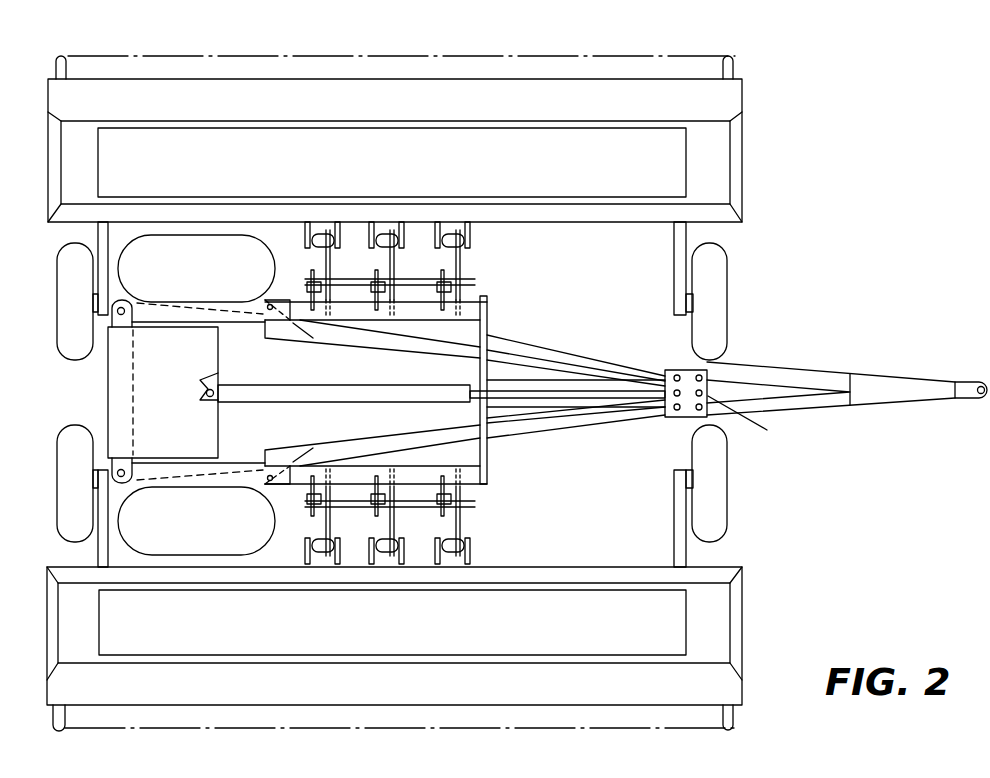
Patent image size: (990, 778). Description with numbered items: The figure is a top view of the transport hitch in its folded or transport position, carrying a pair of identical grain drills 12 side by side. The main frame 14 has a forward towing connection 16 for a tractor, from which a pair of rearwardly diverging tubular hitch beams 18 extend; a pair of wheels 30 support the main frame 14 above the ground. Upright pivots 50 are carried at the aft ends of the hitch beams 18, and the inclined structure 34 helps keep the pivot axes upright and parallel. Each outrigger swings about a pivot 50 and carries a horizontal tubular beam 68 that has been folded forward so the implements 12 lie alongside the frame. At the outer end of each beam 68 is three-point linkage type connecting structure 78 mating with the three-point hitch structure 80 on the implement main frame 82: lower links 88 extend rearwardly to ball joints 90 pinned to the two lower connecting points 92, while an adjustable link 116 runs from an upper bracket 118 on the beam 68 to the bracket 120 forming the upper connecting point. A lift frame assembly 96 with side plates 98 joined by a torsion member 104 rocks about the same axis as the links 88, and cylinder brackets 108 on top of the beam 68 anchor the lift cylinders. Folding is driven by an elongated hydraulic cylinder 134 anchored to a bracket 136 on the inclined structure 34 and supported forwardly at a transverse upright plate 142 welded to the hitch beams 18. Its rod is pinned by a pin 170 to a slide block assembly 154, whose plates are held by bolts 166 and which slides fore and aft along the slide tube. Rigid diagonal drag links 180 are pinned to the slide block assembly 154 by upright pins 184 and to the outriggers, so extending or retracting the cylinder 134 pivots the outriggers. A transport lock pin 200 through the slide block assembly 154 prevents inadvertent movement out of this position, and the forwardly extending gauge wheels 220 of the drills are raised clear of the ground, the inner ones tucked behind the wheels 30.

The grain drill 12 is at (465, 52).
The main frame 14 is at (570, 315).
The towing connection 16 is at (979, 380).
The hitch beam 18 is at (790, 365).
The wheel 30 is at (190, 276).
The inclined structure 34 is at (175, 405).
The pivot 50 is at (122, 320).
The tubular beam 68 is at (345, 320).
The three-point linkage type connecting structure 78 is at (494, 290).
The three-point hitch structure 80 is at (495, 237).
The implement main frame 82 is at (585, 224).
The lower link 88 is at (324, 266).
The ball joint 90 is at (325, 238).
The lower connecting point 92 is at (340, 233).
The lift frame assembly 96 is at (292, 287).
The side plate 98 is at (481, 511).
The torsion member 104 is at (335, 508).
The cylinder bracket 108 is at (290, 482).
The adjustable link 116 is at (390, 264).
The upper bracket 118 is at (398, 486).
The bracket 120 is at (392, 230).
The hydraulic cylinder 134 is at (308, 385).
The bracket 136 is at (212, 385).
The transverse upright plate 142 is at (478, 364).
The slide block assembly 154 is at (670, 368).
The bolt 166 is at (708, 371).
The pin 170 is at (677, 397).
The drag link 180 is at (593, 362).
The upright pin 184 is at (678, 376).
The transport lock pin 200 is at (759, 421).
The gauge wheel 220 is at (57, 497).